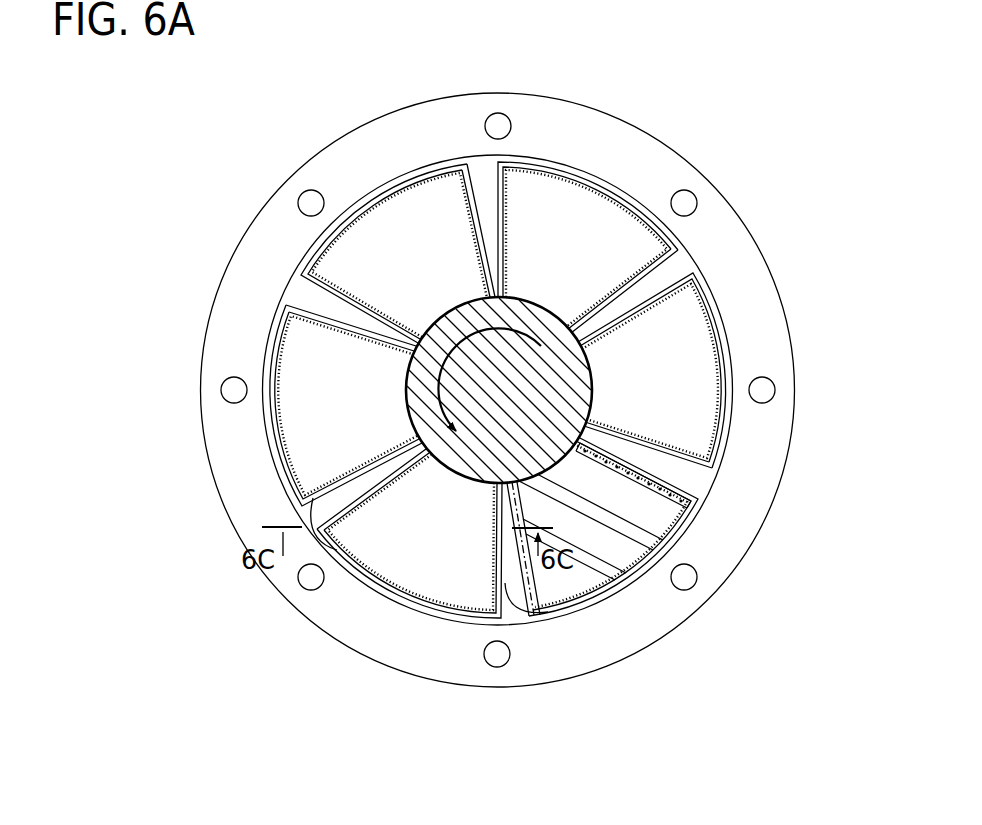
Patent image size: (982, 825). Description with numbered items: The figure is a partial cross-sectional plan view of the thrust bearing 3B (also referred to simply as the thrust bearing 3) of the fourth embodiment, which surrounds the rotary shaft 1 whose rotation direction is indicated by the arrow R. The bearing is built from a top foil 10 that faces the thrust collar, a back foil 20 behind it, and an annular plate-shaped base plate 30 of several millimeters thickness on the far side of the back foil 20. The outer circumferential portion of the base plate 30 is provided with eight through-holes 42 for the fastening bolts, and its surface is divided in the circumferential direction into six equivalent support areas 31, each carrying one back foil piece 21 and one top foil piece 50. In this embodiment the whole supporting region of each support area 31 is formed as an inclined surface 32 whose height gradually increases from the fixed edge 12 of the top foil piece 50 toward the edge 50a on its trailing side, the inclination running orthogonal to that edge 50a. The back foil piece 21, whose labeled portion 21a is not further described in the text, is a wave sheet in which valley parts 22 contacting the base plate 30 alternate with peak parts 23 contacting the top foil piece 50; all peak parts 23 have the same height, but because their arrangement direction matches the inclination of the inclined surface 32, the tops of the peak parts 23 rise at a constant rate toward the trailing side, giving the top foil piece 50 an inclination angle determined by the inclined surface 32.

The rotary shaft 1 is at (430, 357).
The thrust bearing 3B is at (484, 392).
The thrust bearing 3 is at (484, 392).
The top foil 10 is at (484, 392).
The fixed edge 12 is at (470, 183).
The back foil 20 is at (715, 522).
The back foil piece 21 is at (684, 521).
The strip edge 21a is at (681, 494).
The valley parts 22 is at (663, 525).
The peak parts 23 is at (641, 538).
The base plate 30 is at (655, 150).
The support area 31 is at (373, 181).
The inclined surface 32 is at (593, 163).
The through-holes 42 is at (504, 118).
The top foil piece 50 is at (708, 362).
The edge 50a is at (318, 296).
The arrow R is at (463, 333).